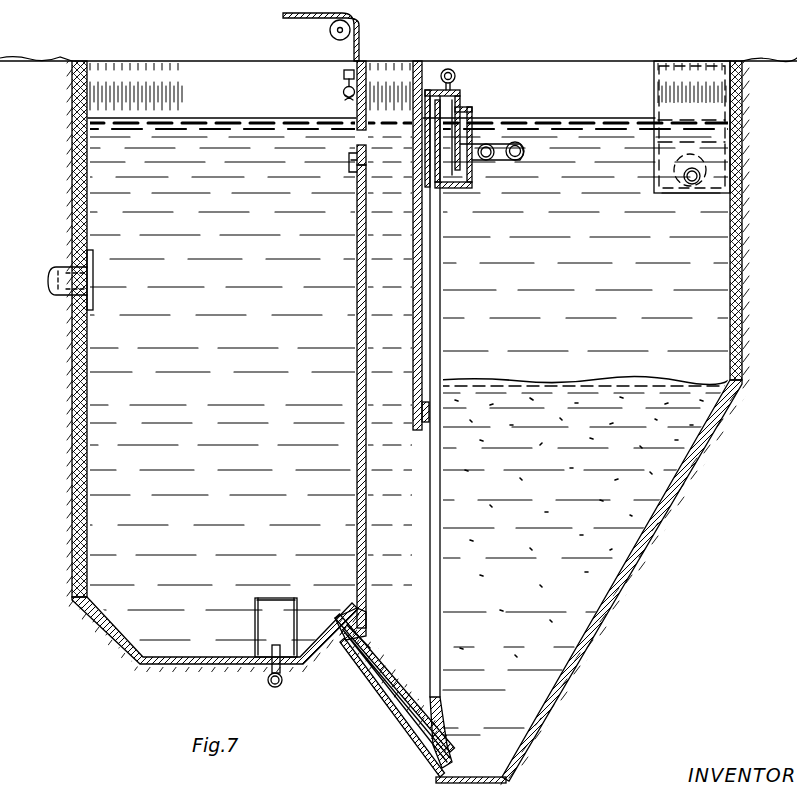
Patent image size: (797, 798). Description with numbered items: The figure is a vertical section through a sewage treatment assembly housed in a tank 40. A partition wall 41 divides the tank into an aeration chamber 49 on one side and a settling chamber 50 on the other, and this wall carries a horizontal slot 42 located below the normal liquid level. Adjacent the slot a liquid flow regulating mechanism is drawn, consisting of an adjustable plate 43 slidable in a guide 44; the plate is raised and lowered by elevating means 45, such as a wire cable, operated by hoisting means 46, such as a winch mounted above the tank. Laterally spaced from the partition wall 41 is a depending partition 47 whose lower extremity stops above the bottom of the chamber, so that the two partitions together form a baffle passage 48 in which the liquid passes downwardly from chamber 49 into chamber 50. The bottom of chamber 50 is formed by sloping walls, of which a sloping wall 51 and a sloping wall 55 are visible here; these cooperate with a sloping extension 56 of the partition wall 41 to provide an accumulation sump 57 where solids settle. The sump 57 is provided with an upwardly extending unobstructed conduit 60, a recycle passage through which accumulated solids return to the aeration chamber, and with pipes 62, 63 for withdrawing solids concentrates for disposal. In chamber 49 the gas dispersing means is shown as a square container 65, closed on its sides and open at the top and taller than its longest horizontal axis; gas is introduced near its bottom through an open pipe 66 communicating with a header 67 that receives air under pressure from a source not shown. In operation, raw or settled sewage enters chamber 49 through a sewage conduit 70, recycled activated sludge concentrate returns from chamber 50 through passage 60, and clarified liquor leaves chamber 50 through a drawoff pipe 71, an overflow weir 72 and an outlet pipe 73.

The tank 40 is at (82, 430).
The partition wall 41 is at (357, 262).
The horizontal slot 42 is at (362, 145).
The adjustable plate 43 is at (348, 104).
The guide 44 is at (348, 158).
The elevating means 45 is at (343, 71).
The hoisting means 46 is at (330, 30).
The depending partition 47 is at (422, 348).
The baffle passage 48 is at (403, 309).
The chamber 49 is at (231, 341).
The chamber 50 is at (600, 341).
The sloping wall 51 is at (655, 520).
The sloping wall 55 is at (520, 699).
The sloping extension 56 is at (370, 636).
The accumulation sump 57 is at (485, 758).
The conduit 60 is at (380, 684).
The pipe 62 is at (484, 165).
The pipe 63 is at (517, 160).
The square container 65 is at (257, 616).
The open pipe 66 is at (272, 650).
The header 67 is at (267, 682).
The sewage conduit 70 is at (60, 266).
The drawoff pipe 71 is at (696, 172).
The overflow weir 72 is at (728, 183).
The outlet pipe 73 is at (713, 166).